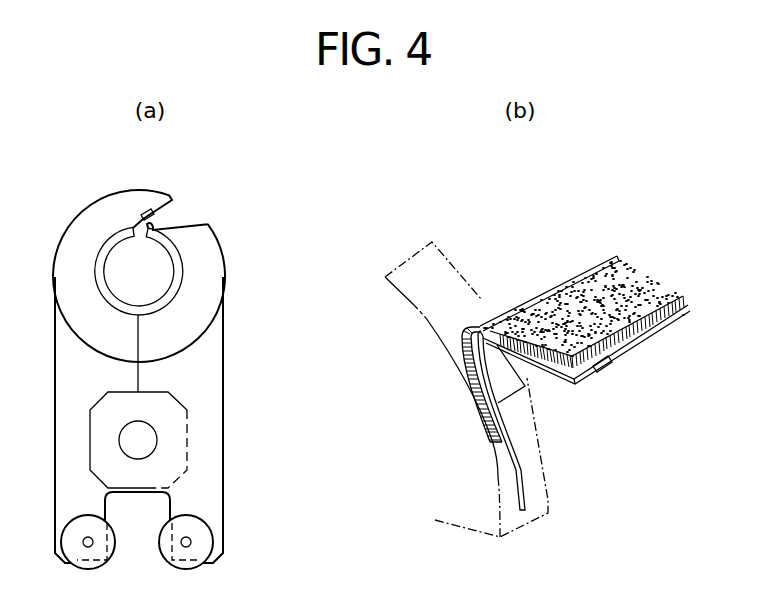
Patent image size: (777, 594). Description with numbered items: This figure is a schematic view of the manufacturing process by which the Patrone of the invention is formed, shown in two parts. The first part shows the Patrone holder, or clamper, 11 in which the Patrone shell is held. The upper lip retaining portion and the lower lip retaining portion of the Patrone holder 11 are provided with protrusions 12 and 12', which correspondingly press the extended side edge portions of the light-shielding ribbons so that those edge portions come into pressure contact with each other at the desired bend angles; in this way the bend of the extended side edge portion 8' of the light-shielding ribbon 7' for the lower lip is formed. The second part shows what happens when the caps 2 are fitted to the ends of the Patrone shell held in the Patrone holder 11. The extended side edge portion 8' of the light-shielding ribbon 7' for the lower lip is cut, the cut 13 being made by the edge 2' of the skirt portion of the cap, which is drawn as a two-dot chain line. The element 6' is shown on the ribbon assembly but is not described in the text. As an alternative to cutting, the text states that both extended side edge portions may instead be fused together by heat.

The Patrone holder (clamper) 11 is at (79, 210).
The protrusion 12 is at (158, 180).
The protrusion 12' is at (197, 205).
The cap 2 is at (457, 380).
The edge of skirt portion of the cap 2' is at (469, 331).
The cut 13 is at (480, 326).
The brush bristles 6' is at (587, 352).
The light-shielding ribbon 7' is at (592, 315).
The extended side edge portion 8' is at (586, 370).